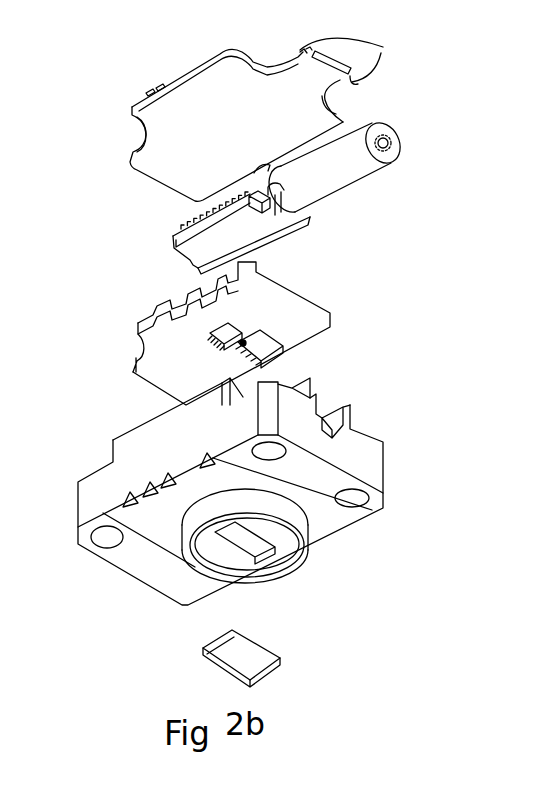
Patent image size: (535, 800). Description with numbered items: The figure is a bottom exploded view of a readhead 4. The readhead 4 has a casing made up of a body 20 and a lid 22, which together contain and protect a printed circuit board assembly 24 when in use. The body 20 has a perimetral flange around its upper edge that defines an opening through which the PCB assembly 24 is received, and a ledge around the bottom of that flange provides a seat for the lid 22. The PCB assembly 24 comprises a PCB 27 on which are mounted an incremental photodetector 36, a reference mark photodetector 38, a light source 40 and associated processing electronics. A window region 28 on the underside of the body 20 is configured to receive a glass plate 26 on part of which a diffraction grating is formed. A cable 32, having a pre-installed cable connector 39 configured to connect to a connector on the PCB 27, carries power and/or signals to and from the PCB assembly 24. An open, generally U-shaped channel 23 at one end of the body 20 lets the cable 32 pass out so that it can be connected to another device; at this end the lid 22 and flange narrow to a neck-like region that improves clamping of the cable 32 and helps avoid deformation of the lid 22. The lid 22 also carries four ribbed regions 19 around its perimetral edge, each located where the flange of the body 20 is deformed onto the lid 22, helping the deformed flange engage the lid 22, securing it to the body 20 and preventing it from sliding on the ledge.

The readhead 4 is at (47, 262).
The ribbed regions 19 is at (145, 83).
The body 20 is at (82, 507).
The lid 22 is at (187, 74).
The U-shaped channel 23 is at (338, 406).
The printed circuit board assembly 24 is at (112, 325).
The glass plate 26 is at (222, 667).
The PCB 27 is at (273, 289).
The window region 28 is at (233, 533).
The cable 32 is at (365, 172).
The incremental photodetector 36 is at (286, 358).
The reference mark photodetector 38 is at (210, 333).
The cable connector 39 is at (172, 256).
The light source 40 is at (246, 343).